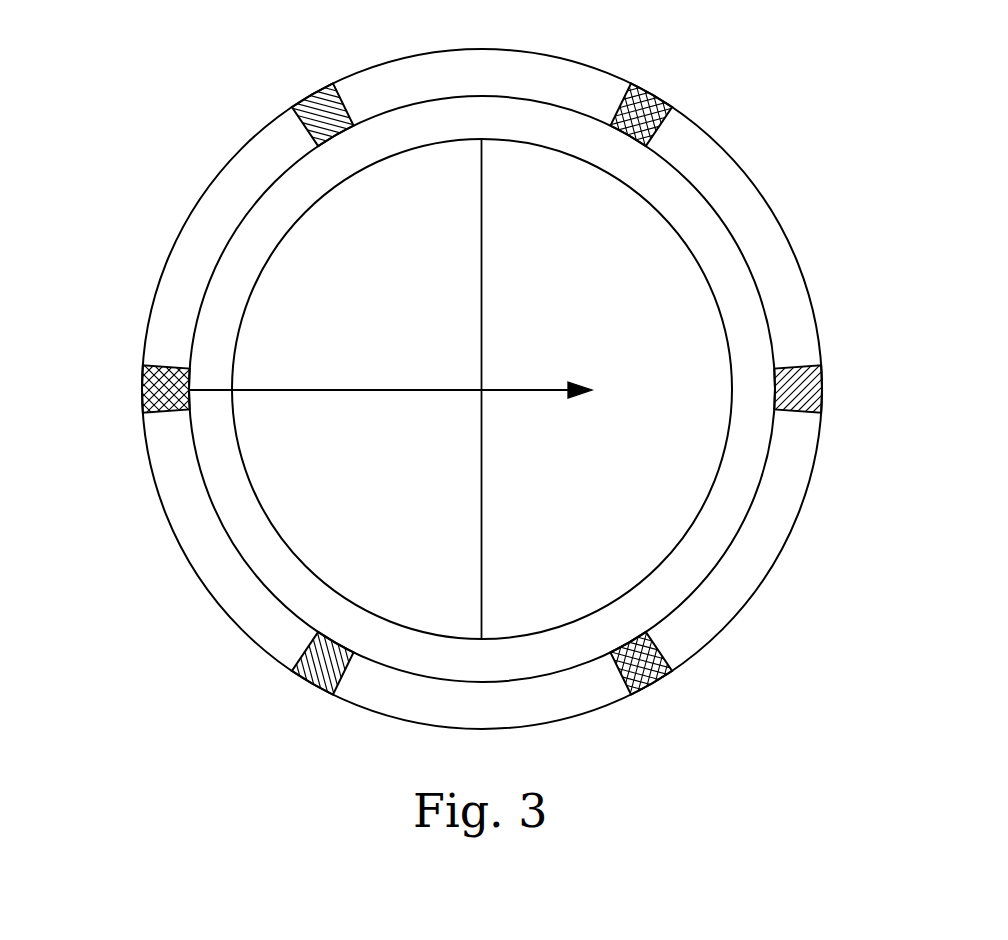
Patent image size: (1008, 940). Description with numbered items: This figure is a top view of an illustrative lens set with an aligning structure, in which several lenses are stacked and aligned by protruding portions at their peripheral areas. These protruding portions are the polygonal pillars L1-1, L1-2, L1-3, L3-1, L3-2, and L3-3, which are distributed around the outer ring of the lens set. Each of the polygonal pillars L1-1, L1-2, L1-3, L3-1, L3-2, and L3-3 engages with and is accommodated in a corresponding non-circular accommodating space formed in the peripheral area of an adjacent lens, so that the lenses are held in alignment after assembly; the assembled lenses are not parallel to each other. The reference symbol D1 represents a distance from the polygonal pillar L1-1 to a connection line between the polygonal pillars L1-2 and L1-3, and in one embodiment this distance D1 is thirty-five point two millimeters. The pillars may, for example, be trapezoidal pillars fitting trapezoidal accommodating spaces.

The distance D1 is at (375, 390).
The polygonal pillar L1-1 is at (141, 372).
The polygonal pillar L1-2 is at (665, 103).
The polygonal pillar L1-3 is at (667, 675).
The polygonal pillar L3-1 is at (818, 367).
The polygonal pillar L3-2 is at (305, 95).
The polygonal pillar L3-3 is at (293, 675).